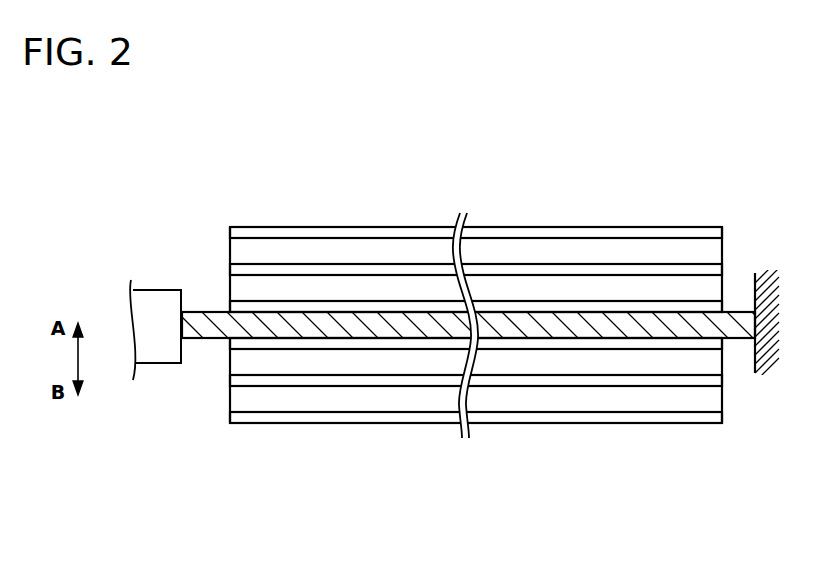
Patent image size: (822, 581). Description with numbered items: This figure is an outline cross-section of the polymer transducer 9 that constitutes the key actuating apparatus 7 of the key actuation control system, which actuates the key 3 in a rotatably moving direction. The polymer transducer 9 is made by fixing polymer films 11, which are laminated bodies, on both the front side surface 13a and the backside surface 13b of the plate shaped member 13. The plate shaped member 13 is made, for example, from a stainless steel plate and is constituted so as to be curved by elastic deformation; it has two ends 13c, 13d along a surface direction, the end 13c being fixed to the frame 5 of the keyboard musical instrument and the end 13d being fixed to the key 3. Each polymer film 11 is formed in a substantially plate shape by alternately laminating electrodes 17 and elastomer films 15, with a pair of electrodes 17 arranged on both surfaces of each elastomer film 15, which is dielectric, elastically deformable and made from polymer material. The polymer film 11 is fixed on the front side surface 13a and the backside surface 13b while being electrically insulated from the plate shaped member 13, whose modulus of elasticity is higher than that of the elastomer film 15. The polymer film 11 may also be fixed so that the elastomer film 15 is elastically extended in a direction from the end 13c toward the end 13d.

The key 3 is at (156, 300).
The frame 5 is at (770, 360).
The key actuating apparatus 7 is at (465, 349).
The polymer transducer 9 is at (688, 438).
The polymer film 11 is at (224, 220).
The plate shaped member 13 is at (561, 322).
The front side surface 13a is at (413, 311).
The backside surface 13b is at (412, 345).
The end 13c is at (742, 318).
The end 13d is at (203, 320).
The elastomer film 15 is at (245, 366).
The electrode 17 is at (555, 424).